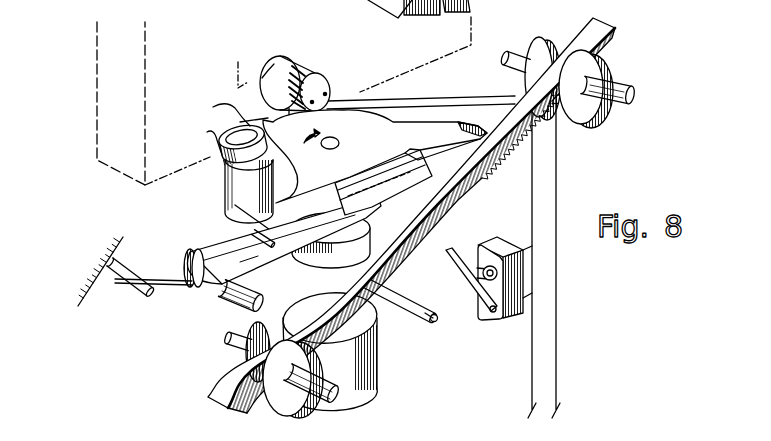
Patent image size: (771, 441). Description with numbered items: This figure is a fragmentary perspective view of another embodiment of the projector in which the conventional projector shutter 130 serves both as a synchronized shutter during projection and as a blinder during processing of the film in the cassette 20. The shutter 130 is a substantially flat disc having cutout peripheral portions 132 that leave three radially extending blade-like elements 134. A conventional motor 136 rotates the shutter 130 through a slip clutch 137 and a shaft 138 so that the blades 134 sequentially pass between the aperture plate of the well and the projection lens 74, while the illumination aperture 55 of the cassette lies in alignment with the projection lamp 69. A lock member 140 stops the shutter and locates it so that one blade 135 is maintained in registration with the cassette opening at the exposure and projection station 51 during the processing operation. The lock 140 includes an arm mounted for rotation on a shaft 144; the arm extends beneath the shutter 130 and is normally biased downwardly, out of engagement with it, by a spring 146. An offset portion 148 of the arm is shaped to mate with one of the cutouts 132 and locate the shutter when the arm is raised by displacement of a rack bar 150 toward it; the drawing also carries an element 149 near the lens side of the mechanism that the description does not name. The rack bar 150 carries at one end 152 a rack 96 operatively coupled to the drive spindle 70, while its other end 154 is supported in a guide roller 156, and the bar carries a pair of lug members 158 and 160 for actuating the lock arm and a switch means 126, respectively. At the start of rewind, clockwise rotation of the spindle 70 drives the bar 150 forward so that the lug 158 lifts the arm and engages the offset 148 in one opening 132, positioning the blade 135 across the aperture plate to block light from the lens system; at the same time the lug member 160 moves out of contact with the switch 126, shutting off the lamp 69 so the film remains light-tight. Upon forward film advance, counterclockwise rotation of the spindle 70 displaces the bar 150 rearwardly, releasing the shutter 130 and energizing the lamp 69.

The cassette 20 is at (97, 101).
The exposure and projection station 51 is at (238, 68).
The illumination aperture 55 is at (262, 83).
The projection lamp 69 is at (278, 57).
The drive spindle 70 is at (620, 78).
The projection lens 74 is at (236, 183).
The rack 96 is at (517, 147).
The switch means 126 is at (500, 320).
The projector shutter 130 is at (343, 113).
The cutout peripheral portions 132 is at (246, 158).
The blade-like elements 134 is at (232, 127).
The shutter blade 135 is at (213, 107).
The motor 136 is at (372, 390).
The slip clutch 137 is at (378, 281).
The shaft 138 is at (357, 257).
The lock member 140 is at (278, 264).
The shaft 144 is at (248, 305).
The spring 146 is at (258, 231).
The offset portion 148 is at (360, 185).
The pin 149 is at (236, 204).
The rack bar 150 is at (508, 118).
The rack bar end 152 is at (605, 24).
The rack bar other end 154 is at (232, 412).
The guide roller 156 is at (238, 355).
The lug member 158 is at (474, 194).
The lug member 160 is at (433, 320).